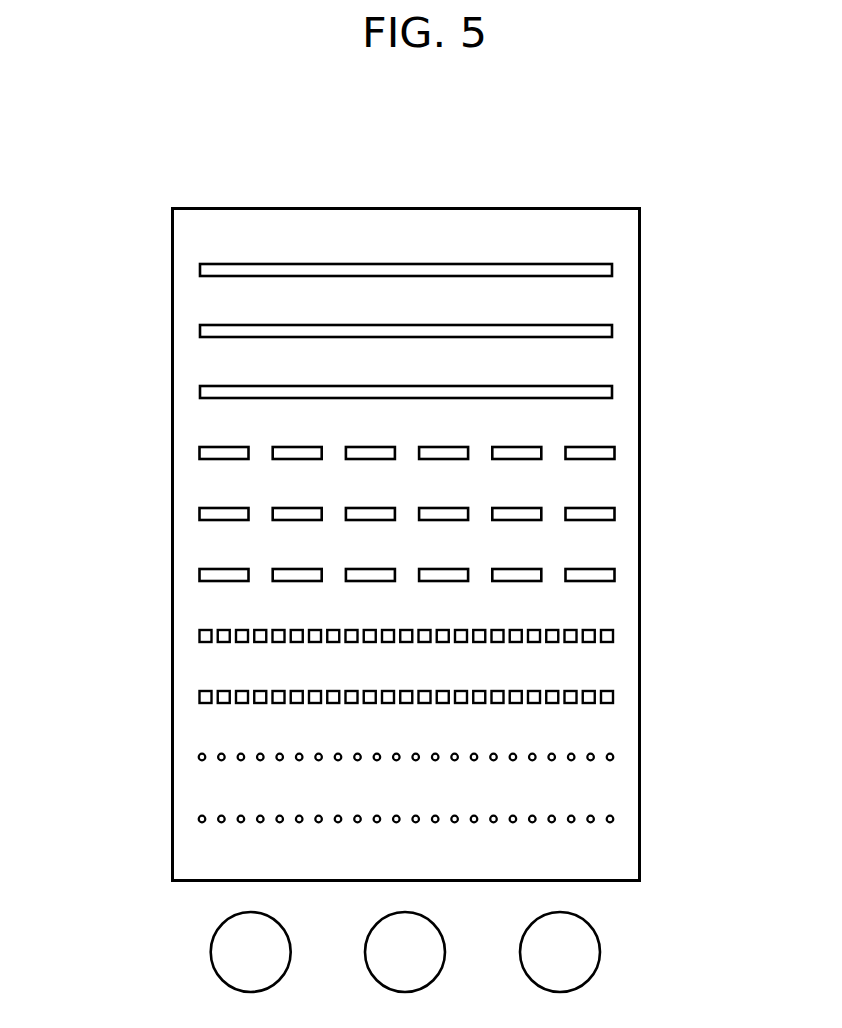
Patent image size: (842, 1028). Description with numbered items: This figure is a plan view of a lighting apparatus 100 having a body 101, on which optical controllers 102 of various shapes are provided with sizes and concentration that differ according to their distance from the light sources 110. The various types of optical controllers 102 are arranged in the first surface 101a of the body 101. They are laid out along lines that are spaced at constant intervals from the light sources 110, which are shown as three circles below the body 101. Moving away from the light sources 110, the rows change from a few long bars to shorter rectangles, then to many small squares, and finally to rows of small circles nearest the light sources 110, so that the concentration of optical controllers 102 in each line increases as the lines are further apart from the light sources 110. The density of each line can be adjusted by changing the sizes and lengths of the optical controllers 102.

The lighting apparatus 100 is at (399, 497).
The body 101 is at (471, 208).
The first surface 101a is at (311, 230).
The optical controllers 102 is at (480, 806).
The light sources 110 is at (600, 952).